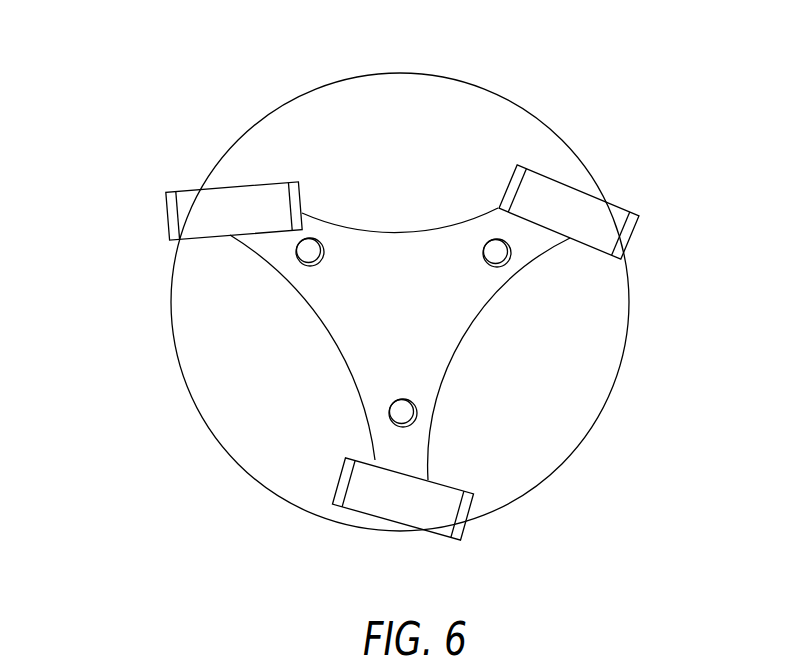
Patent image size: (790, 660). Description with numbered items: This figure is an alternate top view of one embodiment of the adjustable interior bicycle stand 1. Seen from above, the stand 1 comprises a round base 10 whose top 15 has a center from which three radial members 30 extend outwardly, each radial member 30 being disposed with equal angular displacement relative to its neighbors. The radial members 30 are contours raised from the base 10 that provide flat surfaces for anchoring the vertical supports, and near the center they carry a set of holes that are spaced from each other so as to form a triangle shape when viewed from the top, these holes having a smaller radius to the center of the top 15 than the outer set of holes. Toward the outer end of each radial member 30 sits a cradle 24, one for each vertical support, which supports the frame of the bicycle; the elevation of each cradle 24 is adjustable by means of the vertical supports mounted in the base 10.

The adjustable interior bicycle stand 1 is at (122, 241).
The base 10 is at (377, 143).
The top 15 is at (457, 178).
The cradle 24 is at (197, 203).
The radial member 30 is at (525, 228).